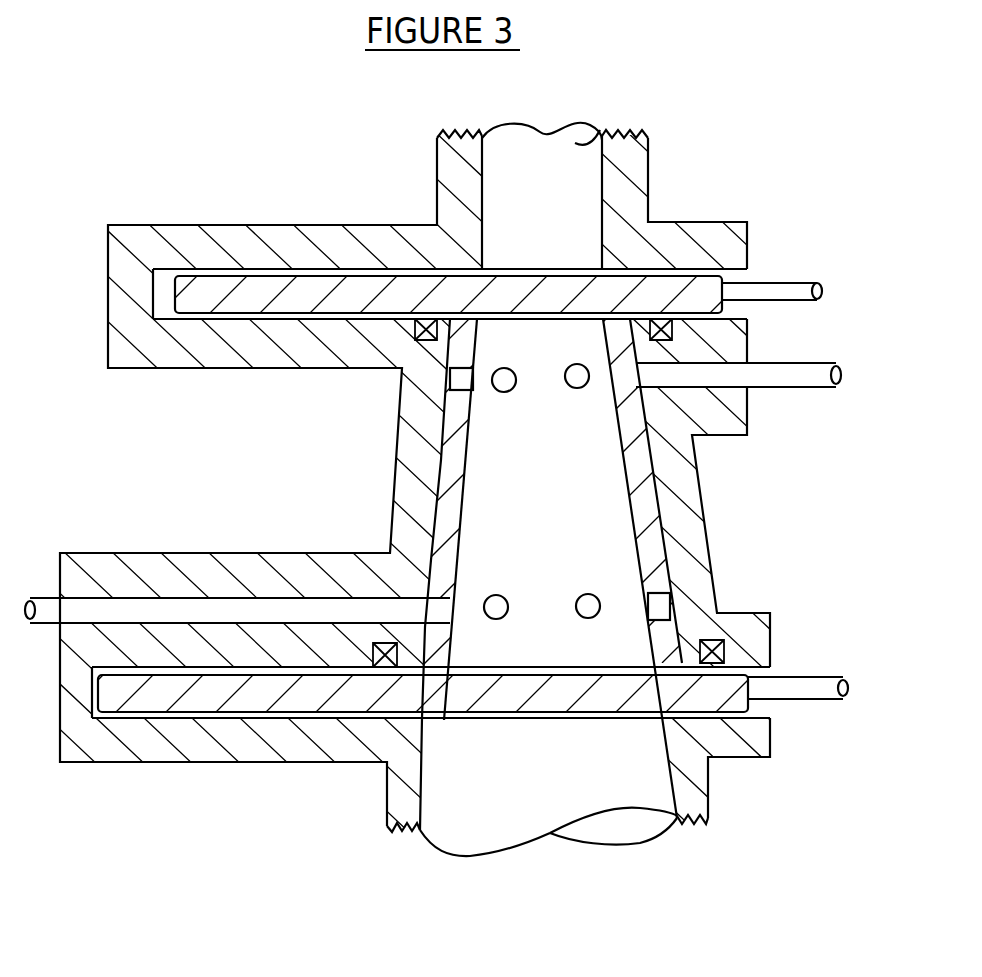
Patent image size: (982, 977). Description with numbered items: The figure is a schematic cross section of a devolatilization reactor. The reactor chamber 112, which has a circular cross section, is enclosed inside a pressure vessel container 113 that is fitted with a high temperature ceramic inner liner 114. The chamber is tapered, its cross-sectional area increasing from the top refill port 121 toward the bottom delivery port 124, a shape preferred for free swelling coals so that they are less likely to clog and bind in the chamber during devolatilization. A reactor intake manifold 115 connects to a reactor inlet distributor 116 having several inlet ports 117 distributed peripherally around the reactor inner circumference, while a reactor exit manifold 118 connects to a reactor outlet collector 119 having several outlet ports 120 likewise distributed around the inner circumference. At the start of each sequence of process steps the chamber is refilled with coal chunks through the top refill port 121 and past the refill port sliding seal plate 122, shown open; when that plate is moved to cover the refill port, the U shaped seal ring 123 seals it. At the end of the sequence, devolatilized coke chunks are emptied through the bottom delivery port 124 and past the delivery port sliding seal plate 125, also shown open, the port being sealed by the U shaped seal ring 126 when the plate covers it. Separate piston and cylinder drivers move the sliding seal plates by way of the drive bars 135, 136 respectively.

The reactor chamber 112 is at (582, 503).
The pressure vessel container 113 is at (693, 552).
The high temperature ceramic inner liner 114 is at (650, 582).
The reactor intake manifold 115 is at (138, 605).
The reactor inlet distributor 116 is at (655, 602).
The inlet ports 117 is at (577, 601).
The reactor exit manifold 118 is at (770, 370).
The reactor outlet collector 119 is at (460, 377).
The outlet ports 120 is at (492, 388).
The top refill port 121 is at (533, 343).
The refill port sliding seal plate 122 is at (345, 290).
The U shaped seal ring 123 is at (430, 317).
The bottom delivery port 124 is at (510, 643).
The delivery port sliding seal plate 125 is at (212, 702).
The U shaped seal ring 126 is at (348, 700).
The drive bar 135 is at (767, 292).
The drive bar 136 is at (788, 688).